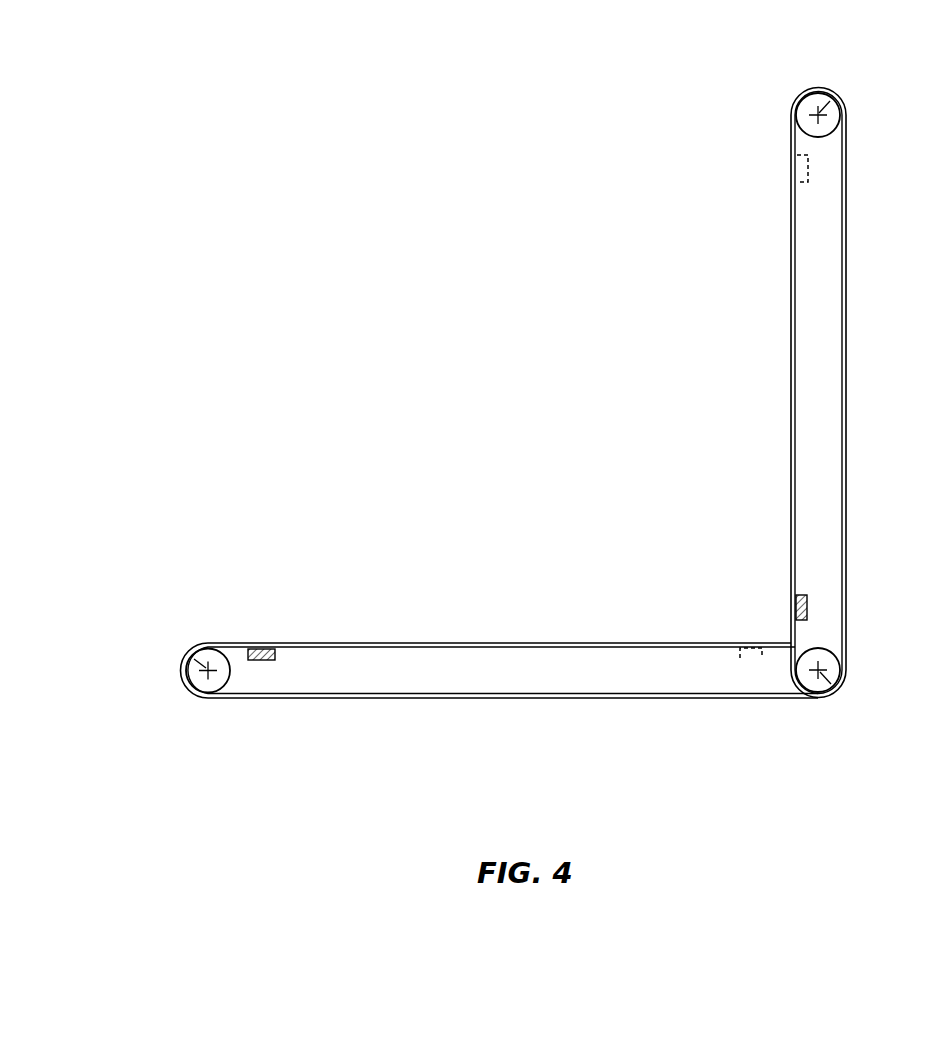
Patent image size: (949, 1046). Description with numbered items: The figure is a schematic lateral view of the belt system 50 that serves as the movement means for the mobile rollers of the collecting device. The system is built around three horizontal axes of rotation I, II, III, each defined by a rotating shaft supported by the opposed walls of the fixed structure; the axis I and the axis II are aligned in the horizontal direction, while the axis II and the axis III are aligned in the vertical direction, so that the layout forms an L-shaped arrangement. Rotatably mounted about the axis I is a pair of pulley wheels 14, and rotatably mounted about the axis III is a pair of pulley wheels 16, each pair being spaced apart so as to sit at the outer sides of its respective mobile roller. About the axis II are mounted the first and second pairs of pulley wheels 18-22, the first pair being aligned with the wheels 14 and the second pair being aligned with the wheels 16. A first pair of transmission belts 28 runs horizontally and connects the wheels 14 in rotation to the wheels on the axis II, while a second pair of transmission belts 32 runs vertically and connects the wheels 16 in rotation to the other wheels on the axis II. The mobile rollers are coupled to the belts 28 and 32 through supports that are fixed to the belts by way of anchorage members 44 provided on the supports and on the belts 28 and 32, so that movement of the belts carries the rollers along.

The pulley wheels 14 is at (197, 678).
The pulley wheels 16 is at (803, 105).
The first and second pairs of pulley wheels 18-22 is at (807, 680).
The first pair of transmission belts 28 is at (503, 699).
The second pair of transmission belts 32 is at (847, 383).
The anchorage members 44 is at (258, 657).
The belt system 50 is at (436, 356).
The axis of rotation I is at (183, 656).
The axis of rotation II is at (836, 687).
The axis of rotation III is at (840, 99).